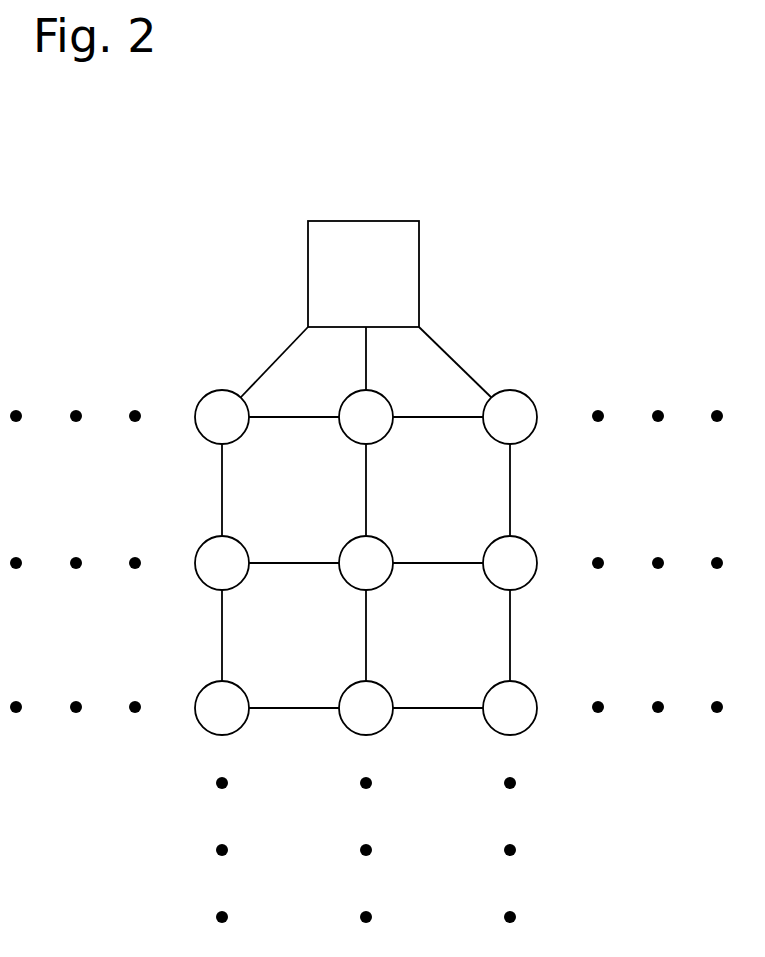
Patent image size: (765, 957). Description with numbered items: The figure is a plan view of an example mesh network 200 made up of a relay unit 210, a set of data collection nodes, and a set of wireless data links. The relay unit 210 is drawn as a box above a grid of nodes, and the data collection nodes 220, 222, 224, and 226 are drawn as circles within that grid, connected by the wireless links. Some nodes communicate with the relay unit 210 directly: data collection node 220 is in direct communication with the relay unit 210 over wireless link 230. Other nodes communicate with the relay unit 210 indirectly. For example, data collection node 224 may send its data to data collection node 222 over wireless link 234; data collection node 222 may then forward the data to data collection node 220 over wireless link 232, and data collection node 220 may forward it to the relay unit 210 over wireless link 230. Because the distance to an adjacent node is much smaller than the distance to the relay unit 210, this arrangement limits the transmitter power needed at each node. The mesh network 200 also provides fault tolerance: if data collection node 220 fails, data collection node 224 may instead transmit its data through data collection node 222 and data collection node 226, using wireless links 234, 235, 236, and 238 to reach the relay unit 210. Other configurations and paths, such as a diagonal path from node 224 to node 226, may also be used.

The mesh network 200 is at (447, 112).
The relay unit 210 is at (419, 248).
The data collection node 220 is at (522, 394).
The data collection node 222 is at (528, 546).
The data collection node 224 is at (525, 691).
The data collection node 226 is at (382, 542).
The wireless data link 230 is at (451, 353).
The wireless data link 232 is at (510, 476).
The wireless data link 234 is at (510, 633).
The wireless data link 235 is at (422, 563).
The wireless data link 236 is at (366, 362).
The wireless data link 238 is at (384, 398).